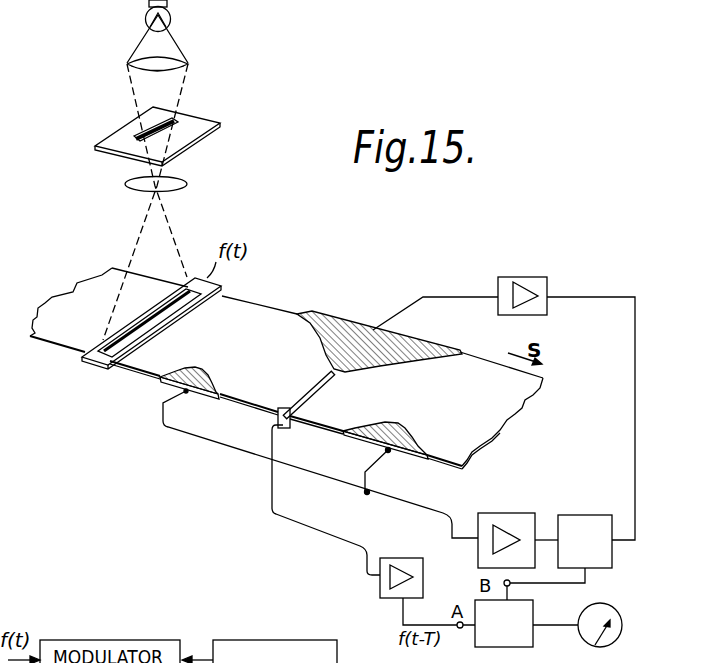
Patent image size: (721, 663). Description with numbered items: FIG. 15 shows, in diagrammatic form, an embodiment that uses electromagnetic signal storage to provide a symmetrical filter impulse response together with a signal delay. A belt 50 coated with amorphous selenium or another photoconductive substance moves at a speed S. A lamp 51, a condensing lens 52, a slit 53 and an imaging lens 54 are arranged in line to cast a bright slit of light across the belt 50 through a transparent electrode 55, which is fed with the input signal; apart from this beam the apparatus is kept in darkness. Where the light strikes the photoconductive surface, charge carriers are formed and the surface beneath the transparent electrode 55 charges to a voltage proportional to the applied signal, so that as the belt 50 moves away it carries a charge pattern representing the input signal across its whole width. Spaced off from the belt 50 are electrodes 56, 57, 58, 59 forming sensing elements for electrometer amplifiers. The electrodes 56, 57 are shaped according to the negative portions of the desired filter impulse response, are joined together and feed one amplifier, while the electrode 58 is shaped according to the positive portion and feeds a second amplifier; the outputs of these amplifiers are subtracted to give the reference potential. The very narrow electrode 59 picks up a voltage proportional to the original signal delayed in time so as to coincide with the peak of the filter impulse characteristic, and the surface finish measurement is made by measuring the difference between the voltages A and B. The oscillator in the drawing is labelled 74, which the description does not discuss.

The belt 50 is at (475, 372).
The lamp 51 is at (171, 24).
The condensing lens 52 is at (189, 67).
The slit 53 is at (222, 130).
The imaging lens 54 is at (187, 189).
The transparent electrode 55 is at (222, 290).
The electrode 56 is at (158, 388).
The electrode 57 is at (416, 458).
The electrode 58 is at (338, 322).
The electrode 59 is at (275, 414).
The oscillator 74 is at (268, 640).